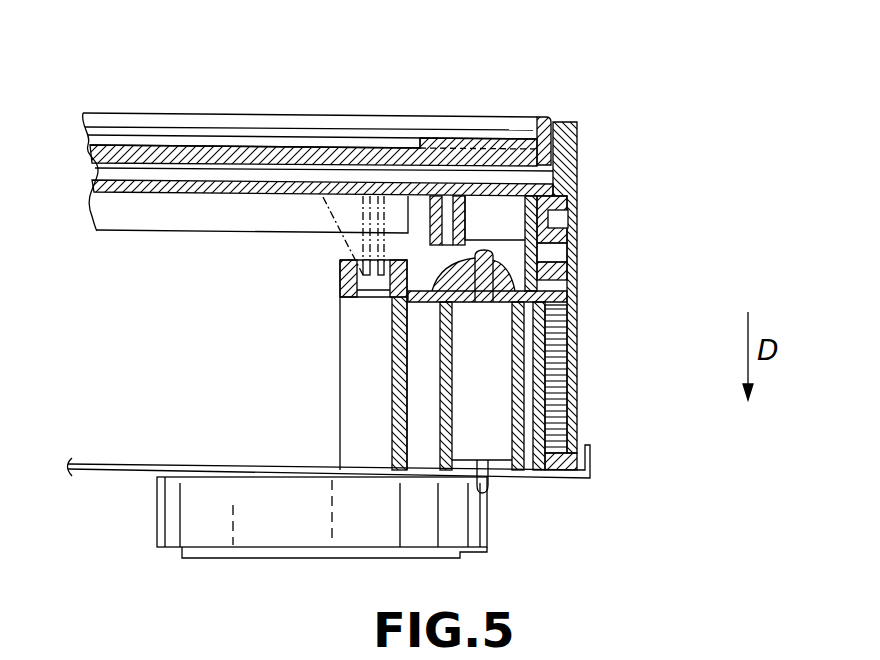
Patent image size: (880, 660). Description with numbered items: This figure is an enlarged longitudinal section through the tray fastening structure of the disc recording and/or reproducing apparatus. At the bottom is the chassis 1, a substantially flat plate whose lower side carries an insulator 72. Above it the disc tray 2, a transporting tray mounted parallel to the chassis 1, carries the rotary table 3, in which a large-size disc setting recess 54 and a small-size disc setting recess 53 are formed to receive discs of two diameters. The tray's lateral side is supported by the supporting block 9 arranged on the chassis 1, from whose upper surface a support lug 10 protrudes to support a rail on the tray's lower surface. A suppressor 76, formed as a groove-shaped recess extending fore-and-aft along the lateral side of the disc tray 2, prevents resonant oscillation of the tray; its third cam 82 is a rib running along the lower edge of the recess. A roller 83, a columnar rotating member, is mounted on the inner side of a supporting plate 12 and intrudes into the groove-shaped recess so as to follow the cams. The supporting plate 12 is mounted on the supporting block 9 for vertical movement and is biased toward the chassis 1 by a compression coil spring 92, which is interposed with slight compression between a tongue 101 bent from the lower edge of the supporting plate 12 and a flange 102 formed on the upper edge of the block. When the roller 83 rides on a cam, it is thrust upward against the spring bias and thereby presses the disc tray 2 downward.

The chassis 1 is at (593, 462).
The disc tray 2 is at (578, 133).
The rotary table 3 is at (547, 120).
The supporting block 9 is at (521, 474).
The support lug 10 is at (403, 323).
The supporting plate 12 is at (577, 323).
The small-size disc setting recess 53 is at (413, 137).
The large-size disc setting recess 54 is at (527, 147).
The insulator 72 is at (487, 530).
The suppressor 76 is at (592, 230).
The third cam 82 is at (568, 258).
The forward side roller 83 is at (575, 200).
The compression coil spring 92 is at (562, 367).
The tongue 101 is at (562, 458).
The flange 102 is at (566, 298).